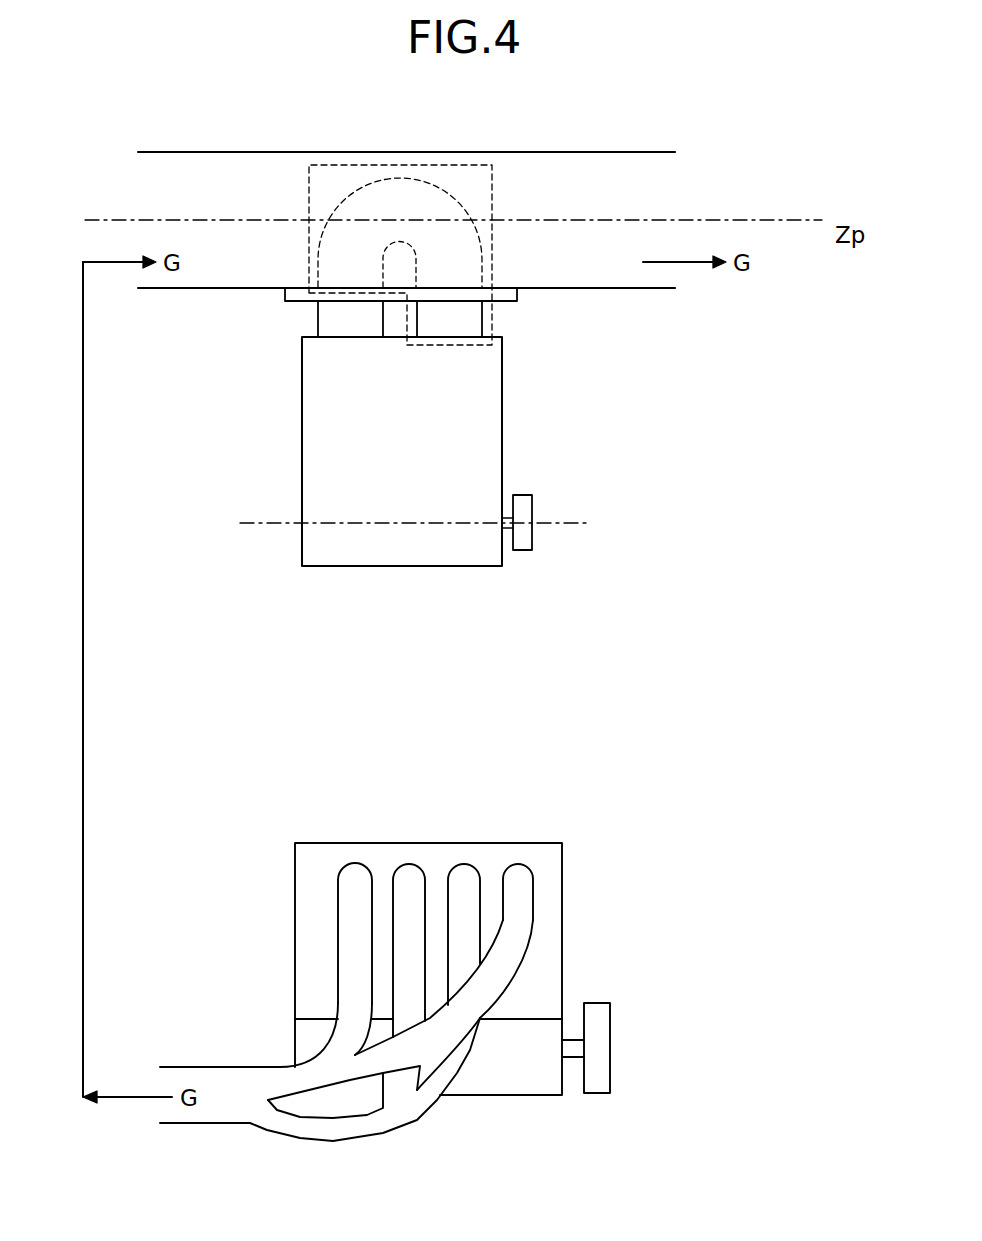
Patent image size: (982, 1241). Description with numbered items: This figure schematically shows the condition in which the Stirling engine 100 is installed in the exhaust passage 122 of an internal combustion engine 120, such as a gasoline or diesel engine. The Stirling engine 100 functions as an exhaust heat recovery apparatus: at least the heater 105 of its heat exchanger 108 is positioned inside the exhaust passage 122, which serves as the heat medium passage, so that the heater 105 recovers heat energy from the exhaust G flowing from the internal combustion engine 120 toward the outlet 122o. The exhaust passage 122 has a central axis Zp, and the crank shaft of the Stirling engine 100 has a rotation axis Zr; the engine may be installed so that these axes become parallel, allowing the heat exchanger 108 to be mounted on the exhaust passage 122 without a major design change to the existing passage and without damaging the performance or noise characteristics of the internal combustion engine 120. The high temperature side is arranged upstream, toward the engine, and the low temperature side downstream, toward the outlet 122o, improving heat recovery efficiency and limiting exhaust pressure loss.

The Stirling engine 100 is at (280, 394).
The heater 105 is at (438, 202).
The heat exchanger 108 is at (493, 245).
The internal combustion engine 120 is at (552, 860).
The exhaust passage 122 is at (628, 164).
The outlet 122o is at (752, 181).